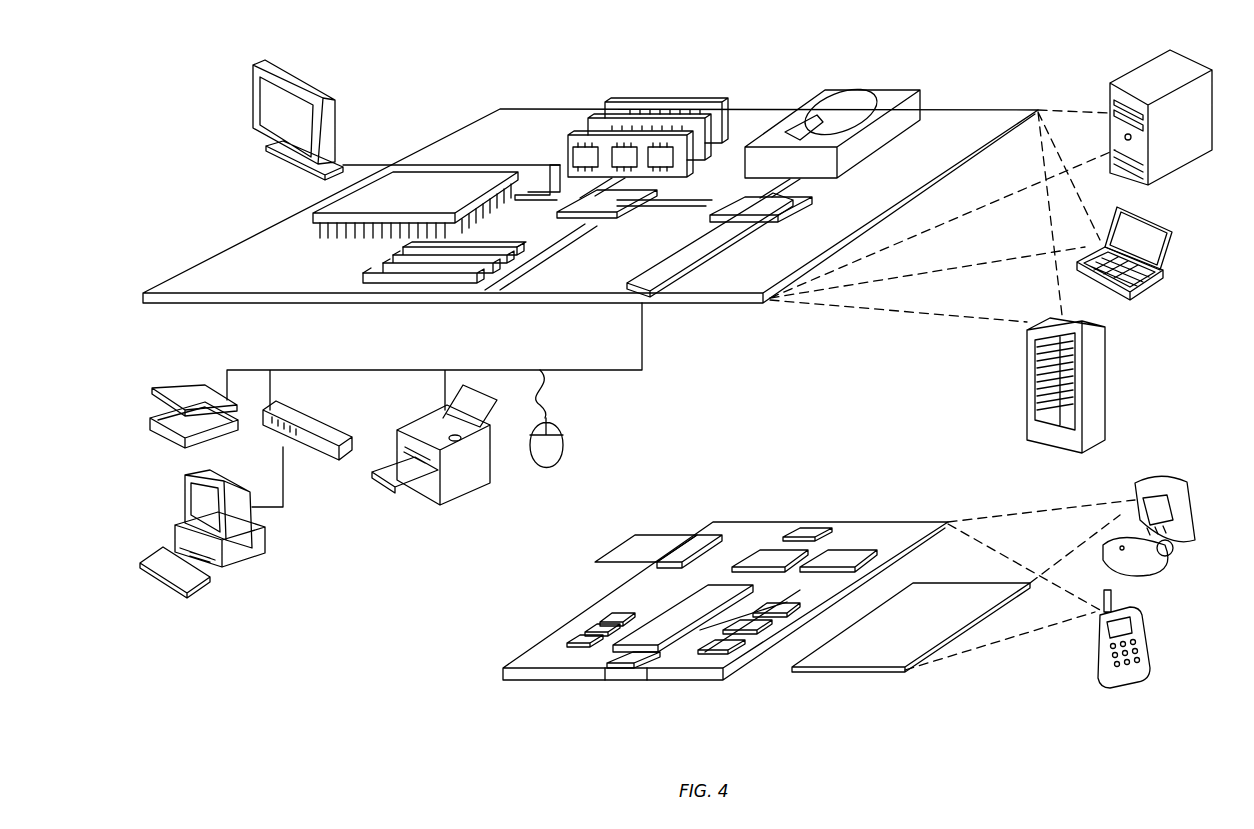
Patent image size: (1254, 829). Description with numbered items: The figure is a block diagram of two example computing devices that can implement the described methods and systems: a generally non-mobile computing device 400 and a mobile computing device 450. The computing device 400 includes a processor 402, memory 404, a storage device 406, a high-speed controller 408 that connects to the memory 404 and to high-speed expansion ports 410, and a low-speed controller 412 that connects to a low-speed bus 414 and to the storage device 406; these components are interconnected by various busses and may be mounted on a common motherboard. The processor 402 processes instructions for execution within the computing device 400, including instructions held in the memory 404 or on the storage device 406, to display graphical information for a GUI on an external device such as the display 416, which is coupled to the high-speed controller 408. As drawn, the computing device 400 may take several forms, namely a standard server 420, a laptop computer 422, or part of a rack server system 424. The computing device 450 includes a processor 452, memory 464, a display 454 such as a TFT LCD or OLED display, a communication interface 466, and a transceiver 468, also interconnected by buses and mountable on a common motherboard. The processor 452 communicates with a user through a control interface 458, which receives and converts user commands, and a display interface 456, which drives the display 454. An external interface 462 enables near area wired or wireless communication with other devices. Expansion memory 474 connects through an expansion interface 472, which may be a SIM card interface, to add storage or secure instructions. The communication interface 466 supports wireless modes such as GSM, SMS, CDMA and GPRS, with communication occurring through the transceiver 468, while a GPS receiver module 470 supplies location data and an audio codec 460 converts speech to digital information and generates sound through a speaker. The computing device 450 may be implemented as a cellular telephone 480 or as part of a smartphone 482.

The computing device 400 is at (170, 72).
The processor 402 is at (316, 216).
The memory 404 is at (612, 101).
The storage device 406 is at (824, 92).
The high-speed controller 408 is at (587, 203).
The high-speed expansion ports 410 is at (385, 270).
The low-speed controller 412 is at (740, 203).
The low-speed bus 414 is at (652, 293).
The display 416 is at (254, 63).
The standard server 420 is at (1110, 98).
The laptop computer 422 is at (1172, 232).
The rack server system 424 is at (1027, 407).
The computing device 450 is at (482, 675).
The processor 452 is at (663, 645).
The display 454 is at (878, 660).
The display interface 456 is at (722, 650).
The control interface 458 is at (760, 630).
The audio codec 460 is at (777, 613).
The external interface 462 is at (630, 670).
The memory 464 is at (583, 628).
The communication interface 466 is at (770, 557).
The transceiver 468 is at (840, 556).
The GPS receiver module 470 is at (808, 530).
The expansion interface 472 is at (702, 534).
The expansion memory 474 is at (648, 534).
The cellular telephone 480 is at (1147, 485).
The smartphone 482 is at (1100, 647).